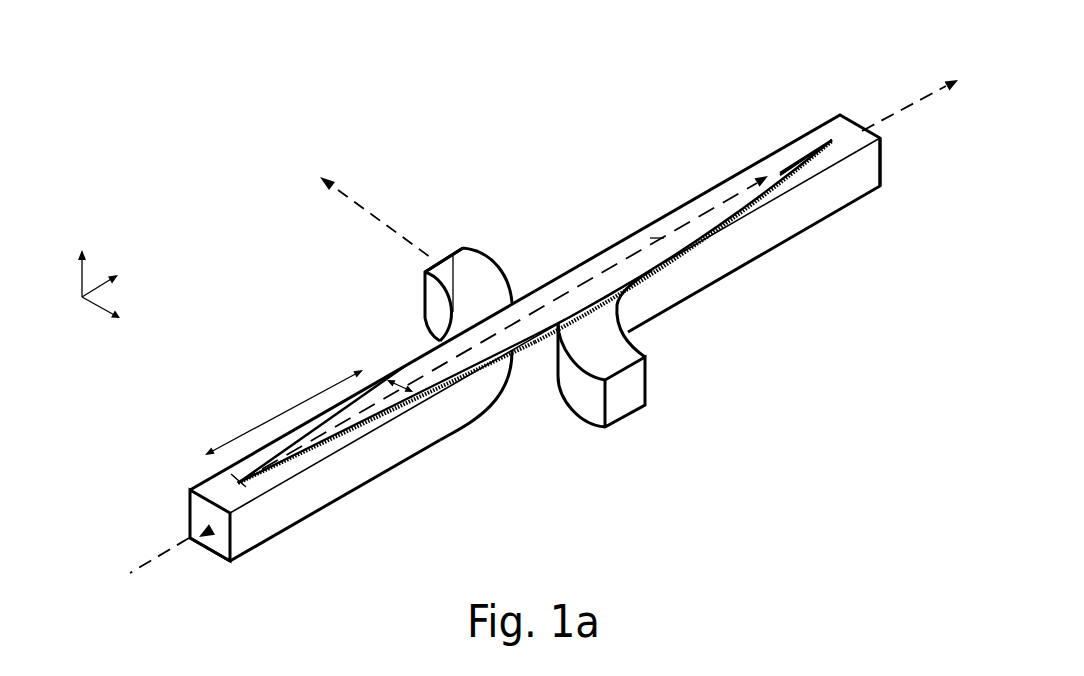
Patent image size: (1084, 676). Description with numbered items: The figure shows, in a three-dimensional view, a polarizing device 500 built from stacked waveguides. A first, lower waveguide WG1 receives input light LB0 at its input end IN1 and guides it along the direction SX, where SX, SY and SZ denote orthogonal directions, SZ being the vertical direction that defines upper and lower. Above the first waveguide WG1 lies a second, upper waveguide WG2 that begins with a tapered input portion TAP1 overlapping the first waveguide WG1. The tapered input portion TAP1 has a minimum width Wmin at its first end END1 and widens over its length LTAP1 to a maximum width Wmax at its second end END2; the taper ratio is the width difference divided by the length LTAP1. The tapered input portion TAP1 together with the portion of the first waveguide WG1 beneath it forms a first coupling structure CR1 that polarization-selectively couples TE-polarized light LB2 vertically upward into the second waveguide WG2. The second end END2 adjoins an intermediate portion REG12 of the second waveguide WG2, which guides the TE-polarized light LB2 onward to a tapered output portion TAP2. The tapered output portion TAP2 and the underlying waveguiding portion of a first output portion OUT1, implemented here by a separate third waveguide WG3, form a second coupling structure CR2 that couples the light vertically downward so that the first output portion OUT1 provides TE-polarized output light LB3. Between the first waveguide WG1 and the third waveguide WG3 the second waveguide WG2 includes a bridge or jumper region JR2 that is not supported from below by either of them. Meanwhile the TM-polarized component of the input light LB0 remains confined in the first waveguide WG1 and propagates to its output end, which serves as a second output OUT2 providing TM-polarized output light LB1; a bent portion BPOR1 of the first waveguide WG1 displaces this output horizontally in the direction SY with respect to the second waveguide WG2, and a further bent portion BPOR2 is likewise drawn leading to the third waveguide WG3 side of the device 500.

The polarizing device 500 is at (197, 182).
The direction SX is at (118, 277).
The direction SY is at (120, 317).
The direction SZ is at (80, 261).
The input light LB0 is at (170, 552).
The input end of first waveguide IN1 is at (253, 538).
The first waveguide WG1 is at (350, 482).
The third waveguide WG3 is at (773, 233).
The first output portion OUT1 is at (840, 197).
The TE-polarized output light LB3 is at (903, 118).
The tapered input portion TAP1 is at (232, 390).
The first coupling structure CR1 is at (310, 300).
The second waveguide WG2 is at (622, 237).
The tapered output portion TAP2 is at (654, 144).
The second coupling structure CR2 is at (725, 42).
The first end of the tapered portion END1 is at (237, 479).
The second end of the tapered portion END2 is at (413, 392).
The length of the tapered portion LTAP1 is at (284, 412).
The maximum width Wmax is at (387, 380).
The minimum width Wmin is at (248, 484).
The bent portion BPOR1 is at (498, 268).
The second output OUT2 is at (453, 250).
The TM-polarized output light LB1 is at (358, 200).
The intermediate portion REG12 is at (397, 297).
The second bent portion BPOR2 is at (648, 378).
The bridge region JR2 is at (551, 353).
The TE-polarized light LB2 is at (657, 238).